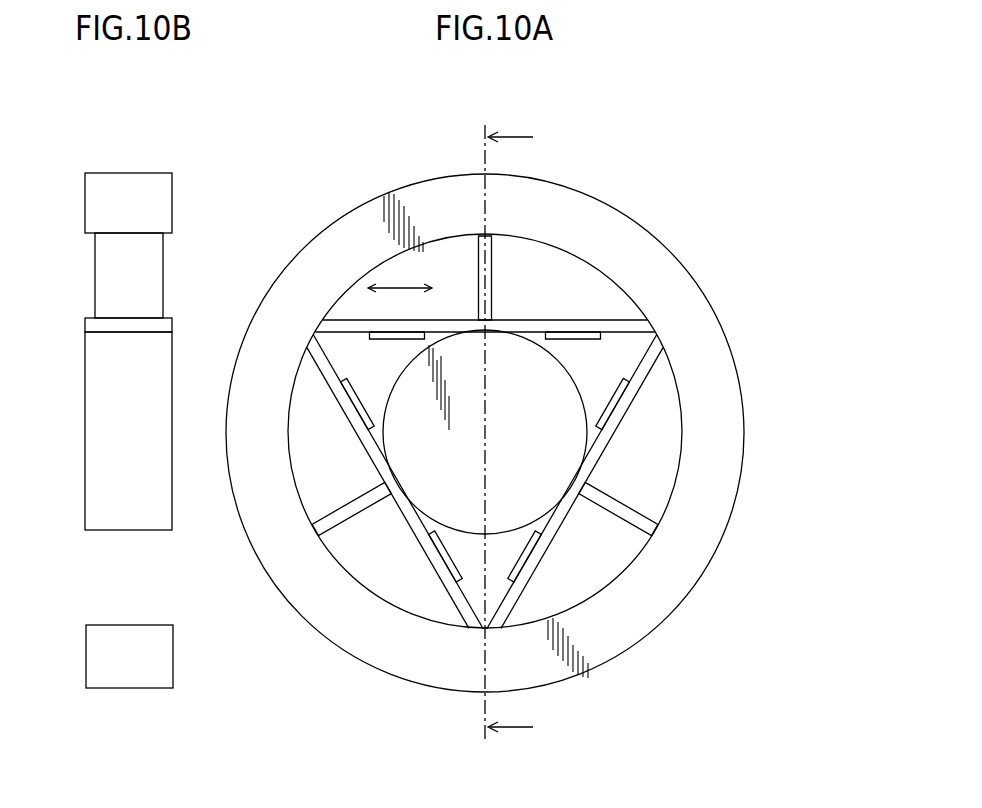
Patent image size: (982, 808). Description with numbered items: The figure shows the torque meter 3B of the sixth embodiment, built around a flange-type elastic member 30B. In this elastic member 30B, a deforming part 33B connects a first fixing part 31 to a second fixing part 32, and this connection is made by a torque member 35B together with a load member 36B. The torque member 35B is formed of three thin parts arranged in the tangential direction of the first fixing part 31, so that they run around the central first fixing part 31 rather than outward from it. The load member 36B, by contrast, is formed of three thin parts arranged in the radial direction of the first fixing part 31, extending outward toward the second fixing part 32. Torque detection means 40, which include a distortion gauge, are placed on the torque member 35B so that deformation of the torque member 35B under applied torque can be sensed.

In FIG. 10A, the torque meter 3B is at (772, 163).
In FIG. 10A, the flange-type elastic member 30B is at (841, 592).
In FIG. 10A, the first fixing part 31 is at (525, 488).
In FIG. 10A, the second fixing part 32 is at (716, 522).
In FIG. 10A, the deforming part 33B is at (602, 533).
In FIG. 10B, the torque member 35B is at (93, 323).
In FIG. 10A, the torque member 35B is at (617, 332).
In FIG. 10B, the load member 36B is at (118, 273).
In FIG. 10A, the load member 36B is at (493, 265).
In FIG. 10A, the torque detection means 40 is at (380, 337).